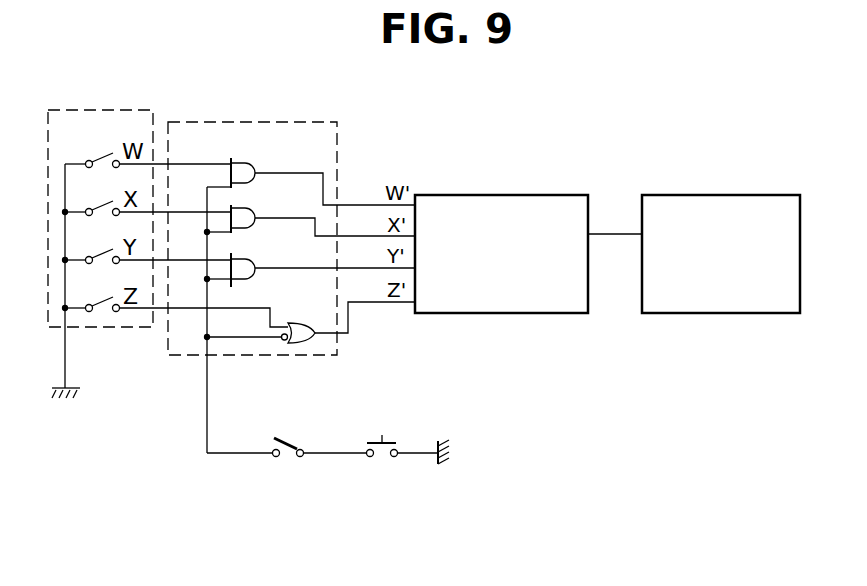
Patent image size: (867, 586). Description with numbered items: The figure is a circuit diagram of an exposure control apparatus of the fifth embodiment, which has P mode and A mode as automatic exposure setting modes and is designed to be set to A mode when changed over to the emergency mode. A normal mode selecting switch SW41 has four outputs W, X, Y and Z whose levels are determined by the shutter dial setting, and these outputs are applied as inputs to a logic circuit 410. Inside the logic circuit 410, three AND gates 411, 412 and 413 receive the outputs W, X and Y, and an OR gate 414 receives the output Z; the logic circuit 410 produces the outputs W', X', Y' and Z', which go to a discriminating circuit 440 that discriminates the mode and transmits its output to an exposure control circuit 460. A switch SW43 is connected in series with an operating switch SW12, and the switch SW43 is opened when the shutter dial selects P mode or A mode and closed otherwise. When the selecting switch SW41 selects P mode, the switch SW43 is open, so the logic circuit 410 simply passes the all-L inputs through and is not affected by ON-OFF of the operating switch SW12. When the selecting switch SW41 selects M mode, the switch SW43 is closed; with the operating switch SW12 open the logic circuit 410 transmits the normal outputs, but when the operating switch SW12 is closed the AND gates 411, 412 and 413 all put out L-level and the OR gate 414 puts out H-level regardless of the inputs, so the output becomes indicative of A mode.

The normal mode selecting switch SW41 is at (103, 110).
The logic circuit 410 is at (291, 256).
The AND gate 411 is at (253, 166).
The AND gate 412 is at (253, 212).
The AND gate 413 is at (251, 262).
The OR gate 414 is at (298, 321).
The discriminating circuit 440 is at (506, 195).
The exposure control circuit 460 is at (717, 195).
The switch SW43 is at (287, 434).
The operating switch SW12 is at (383, 457).